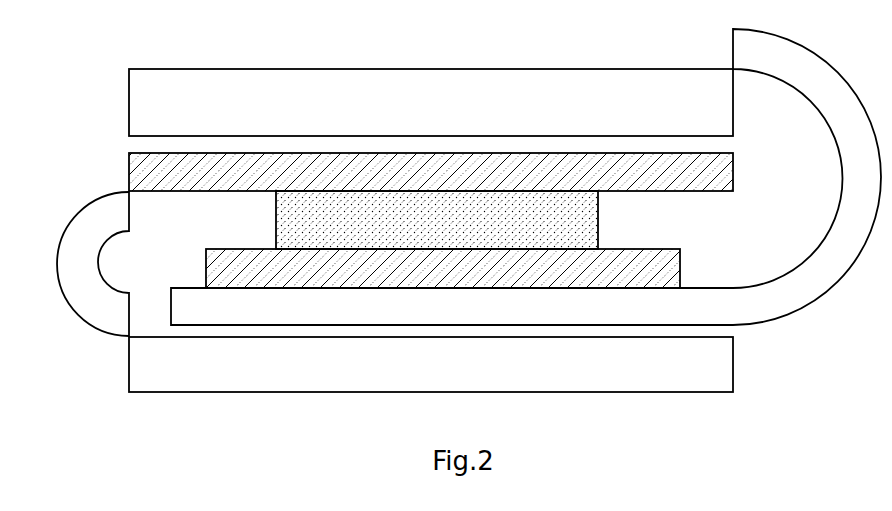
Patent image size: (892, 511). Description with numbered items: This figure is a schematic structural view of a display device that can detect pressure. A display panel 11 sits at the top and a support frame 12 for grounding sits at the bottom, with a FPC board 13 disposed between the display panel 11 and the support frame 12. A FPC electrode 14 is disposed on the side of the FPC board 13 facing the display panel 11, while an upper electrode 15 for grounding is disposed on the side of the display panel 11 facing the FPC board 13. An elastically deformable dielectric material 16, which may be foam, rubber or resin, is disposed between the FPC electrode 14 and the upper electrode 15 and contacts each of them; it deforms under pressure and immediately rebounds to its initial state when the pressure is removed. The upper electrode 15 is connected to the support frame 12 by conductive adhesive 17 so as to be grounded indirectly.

The display panel 11 is at (431, 102).
The support frame 12 is at (431, 364).
The FPC board 13 is at (526, 177).
The FPC electrode 14 is at (443, 268).
The upper electrode 15 is at (431, 172).
The elastically deformable dielectric material 16 is at (437, 220).
The conductive adhesive 17 is at (93, 264).